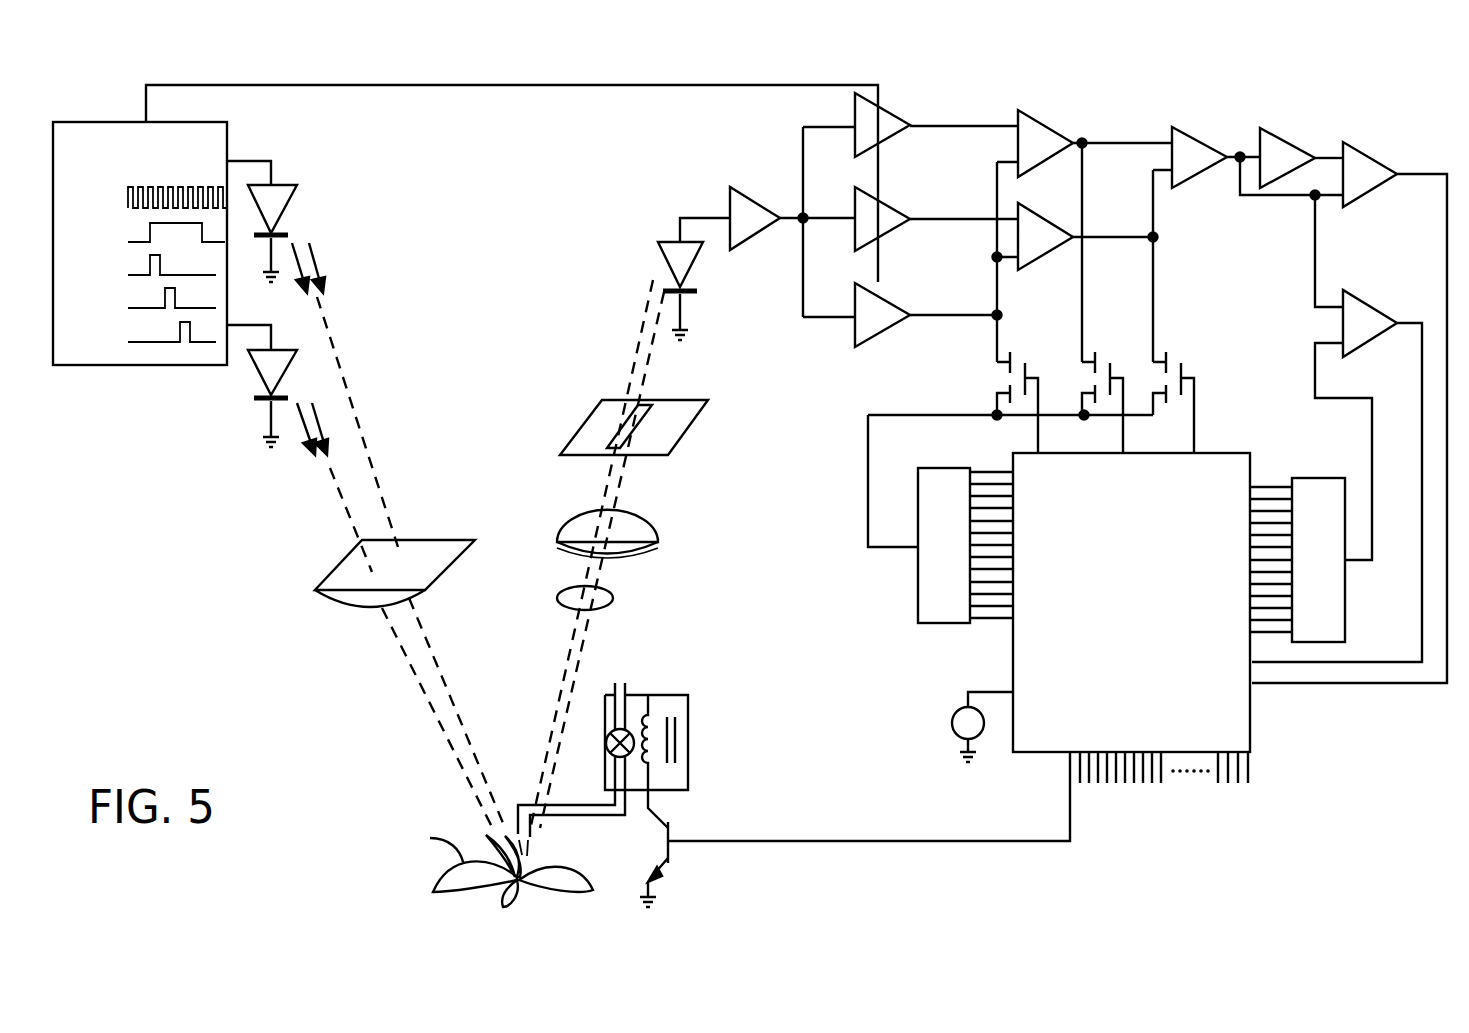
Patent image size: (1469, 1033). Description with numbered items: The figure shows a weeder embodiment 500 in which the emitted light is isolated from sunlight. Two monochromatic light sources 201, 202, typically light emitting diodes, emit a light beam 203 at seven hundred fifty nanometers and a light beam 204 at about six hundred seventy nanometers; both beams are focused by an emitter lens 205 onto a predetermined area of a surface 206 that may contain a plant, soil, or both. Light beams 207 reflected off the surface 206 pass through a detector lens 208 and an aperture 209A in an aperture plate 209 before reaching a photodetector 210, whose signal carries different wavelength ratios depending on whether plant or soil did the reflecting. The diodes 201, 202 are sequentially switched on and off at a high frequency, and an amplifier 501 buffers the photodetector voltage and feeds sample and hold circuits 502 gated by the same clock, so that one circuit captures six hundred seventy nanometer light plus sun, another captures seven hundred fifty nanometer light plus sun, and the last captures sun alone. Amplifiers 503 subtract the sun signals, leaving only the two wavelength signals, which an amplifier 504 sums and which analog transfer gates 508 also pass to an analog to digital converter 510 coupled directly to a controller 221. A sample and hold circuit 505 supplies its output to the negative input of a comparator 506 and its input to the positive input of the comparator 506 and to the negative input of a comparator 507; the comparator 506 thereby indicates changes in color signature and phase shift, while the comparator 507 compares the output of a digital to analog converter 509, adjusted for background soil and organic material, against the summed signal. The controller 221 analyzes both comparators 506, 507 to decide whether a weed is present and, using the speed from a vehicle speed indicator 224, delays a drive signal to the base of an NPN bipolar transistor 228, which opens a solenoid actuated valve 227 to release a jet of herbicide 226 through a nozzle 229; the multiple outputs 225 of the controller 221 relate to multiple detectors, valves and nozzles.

The monochromatic light source 201 is at (269, 220).
The monochromatic light source 202 is at (269, 382).
The light beam 203 is at (372, 460).
The light beam 204 is at (348, 515).
The emitter lens 205 is at (447, 570).
The surface 206 is at (530, 862).
The light beams 207 is at (613, 598).
The detector lens 208 is at (660, 528).
The aperture plate 209 is at (616, 402).
The aperture 209A is at (622, 428).
The photodetector 210 is at (670, 240).
The controller 221 is at (1155, 619).
The vehicle speed indicator 224 is at (957, 738).
The multiple outputs 225 is at (1034, 821).
The herbicide 226 is at (652, 705).
The solenoid actuated valve 227 is at (704, 705).
The NPN bipolar transistor 228 is at (720, 848).
The nozzle 229 is at (530, 803).
The weed detection and spraying system 500 is at (158, 671).
The amplifier 501 is at (748, 193).
The sample and hold circuits 502 is at (921, 70).
The amplifiers 503 is at (1083, 70).
The amplifier 504 is at (1229, 139).
The sample and hold circuit 505 is at (1324, 133).
The comparator 506 is at (1380, 163).
The comparator 507 is at (1372, 306).
The analog transfer gates 508 is at (1207, 356).
The digital to analog converter 509 is at (1337, 549).
The analog to digital converter 510 is at (961, 509).